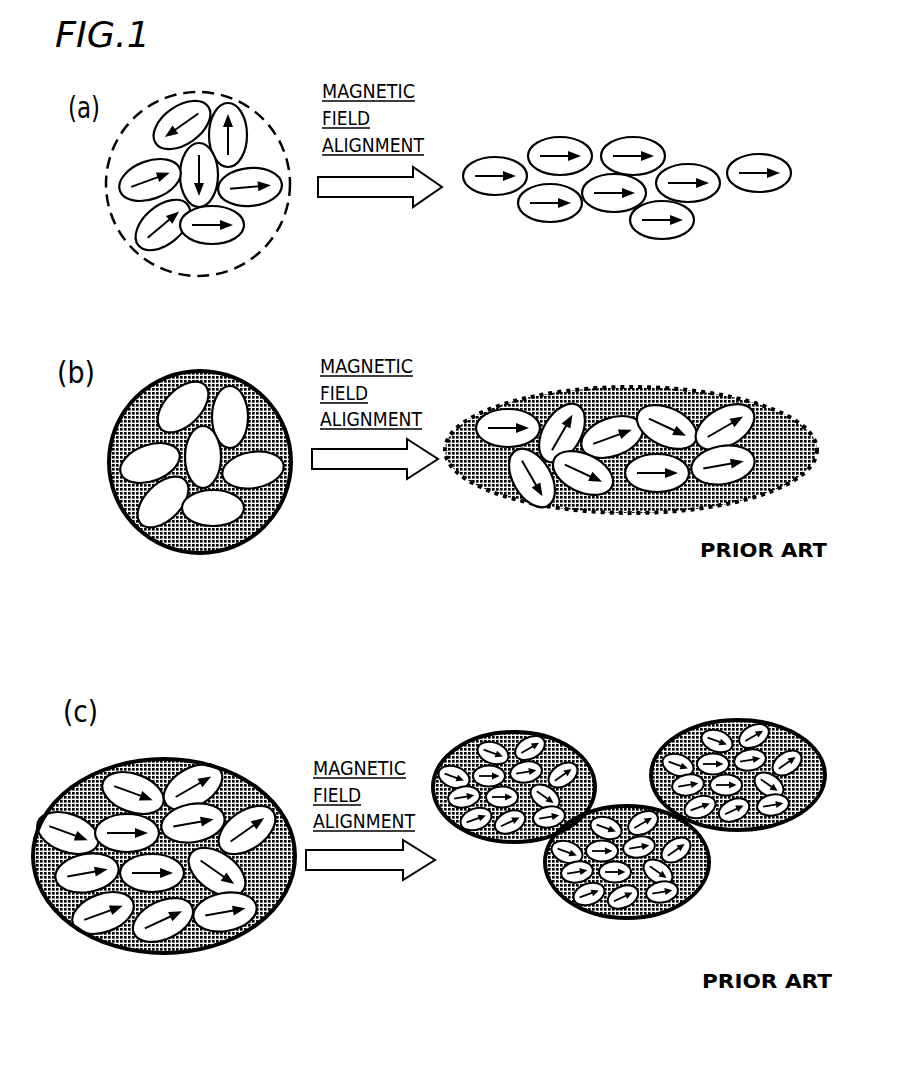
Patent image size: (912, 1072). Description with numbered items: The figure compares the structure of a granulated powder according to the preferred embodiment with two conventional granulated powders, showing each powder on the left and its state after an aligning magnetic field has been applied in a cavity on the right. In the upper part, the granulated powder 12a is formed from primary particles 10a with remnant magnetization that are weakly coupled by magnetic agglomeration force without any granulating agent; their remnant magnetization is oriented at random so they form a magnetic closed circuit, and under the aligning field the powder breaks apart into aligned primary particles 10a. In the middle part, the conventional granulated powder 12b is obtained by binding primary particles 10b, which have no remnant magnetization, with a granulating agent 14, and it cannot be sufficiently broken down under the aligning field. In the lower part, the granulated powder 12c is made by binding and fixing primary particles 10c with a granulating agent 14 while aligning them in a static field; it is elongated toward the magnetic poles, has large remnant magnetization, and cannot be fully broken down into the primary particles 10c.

The primary particles 10a is at (263, 197).
The granulated powder 12a is at (254, 254).
The granulating agent 14 is at (137, 417).
The primary particles 10b is at (257, 478).
The granulated powder 12b is at (256, 536).
The primary particles 10c is at (253, 843).
The granulated powder 12c is at (259, 932).